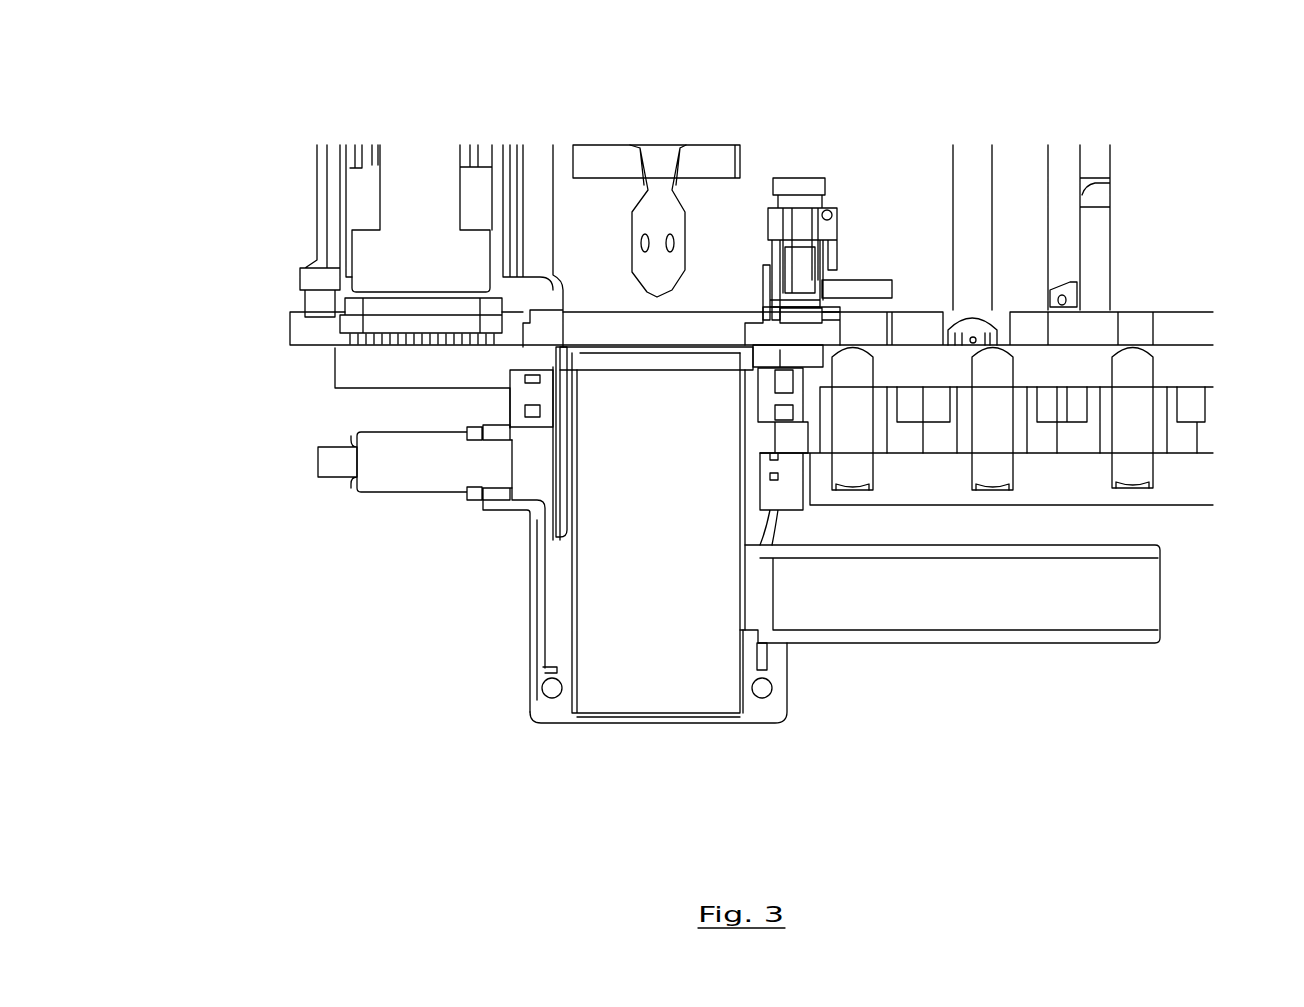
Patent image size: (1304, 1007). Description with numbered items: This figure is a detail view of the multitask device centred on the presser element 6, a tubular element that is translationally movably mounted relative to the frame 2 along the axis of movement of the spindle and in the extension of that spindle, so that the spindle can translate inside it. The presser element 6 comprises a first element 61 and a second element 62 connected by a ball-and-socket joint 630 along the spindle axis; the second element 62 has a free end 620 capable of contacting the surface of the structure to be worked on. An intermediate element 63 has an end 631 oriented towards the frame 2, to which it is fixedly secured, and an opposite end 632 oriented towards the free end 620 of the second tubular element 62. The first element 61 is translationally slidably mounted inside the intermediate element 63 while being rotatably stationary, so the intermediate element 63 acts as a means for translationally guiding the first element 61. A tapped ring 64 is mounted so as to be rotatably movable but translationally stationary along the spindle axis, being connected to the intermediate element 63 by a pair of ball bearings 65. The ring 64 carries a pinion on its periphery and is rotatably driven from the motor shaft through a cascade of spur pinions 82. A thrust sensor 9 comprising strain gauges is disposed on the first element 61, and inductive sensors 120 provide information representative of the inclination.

The frame 2 is at (1103, 145).
The pair of ball bearings 65 is at (787, 385).
The ring 64 is at (560, 410).
The end of the intermediate element 631 is at (507, 410).
The inductive sensors 120 is at (357, 460).
The intermediate element 63 is at (547, 517).
The thrust sensor 9 is at (537, 568).
The second element 62 is at (535, 598).
The opposite end of the intermediate element 632 is at (545, 680).
The presser element 6 is at (403, 681).
The free end 620 is at (558, 723).
The first element 61 is at (583, 668).
The ball-and-socket joint 630 is at (748, 696).
The cascade of spur pinions 82 is at (775, 435).